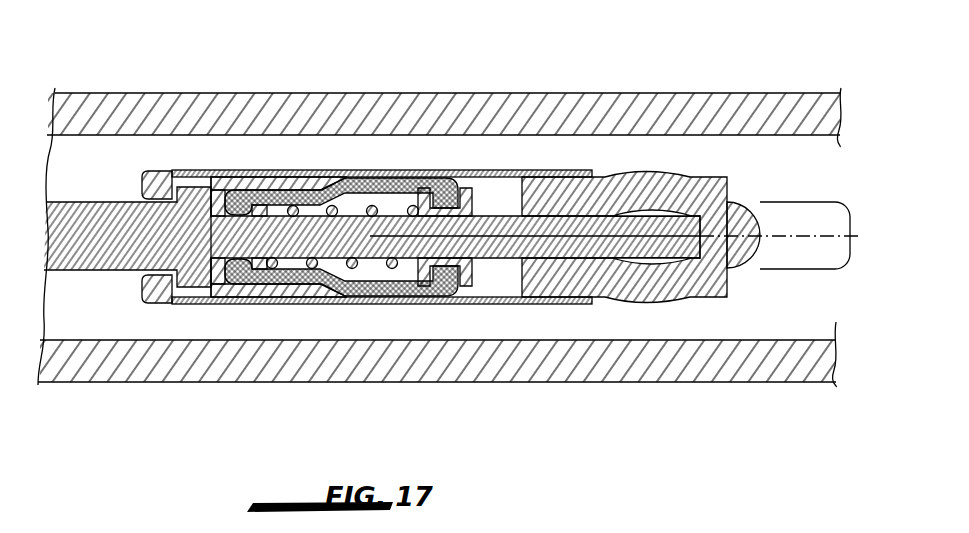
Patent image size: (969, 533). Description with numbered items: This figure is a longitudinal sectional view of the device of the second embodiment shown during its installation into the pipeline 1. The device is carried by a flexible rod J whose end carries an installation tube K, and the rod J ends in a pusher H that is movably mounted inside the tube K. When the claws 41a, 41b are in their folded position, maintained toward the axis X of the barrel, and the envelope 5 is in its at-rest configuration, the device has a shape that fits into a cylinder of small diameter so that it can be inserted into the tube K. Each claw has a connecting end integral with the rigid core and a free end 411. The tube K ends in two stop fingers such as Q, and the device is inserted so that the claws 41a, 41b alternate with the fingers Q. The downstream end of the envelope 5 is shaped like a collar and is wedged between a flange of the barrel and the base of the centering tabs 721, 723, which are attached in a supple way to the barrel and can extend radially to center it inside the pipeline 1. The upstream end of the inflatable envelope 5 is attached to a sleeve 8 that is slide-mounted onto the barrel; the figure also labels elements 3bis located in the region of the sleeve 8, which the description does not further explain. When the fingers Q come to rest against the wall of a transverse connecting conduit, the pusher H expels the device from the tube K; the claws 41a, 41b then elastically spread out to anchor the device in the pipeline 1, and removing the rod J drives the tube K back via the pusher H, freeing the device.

The pipeline 1 is at (700, 90).
The centering tab 721 is at (283, 176).
The centering tab 723 is at (286, 287).
The balls 3bis is at (410, 195).
The free end 411 is at (541, 183).
The sleeve 8 is at (477, 203).
The claw 41a is at (600, 176).
The claw 41b is at (600, 298).
The envelope 5 is at (381, 287).
The pusher H is at (190, 190).
The tube K is at (230, 305).
The flexible rod J is at (50, 245).
The axis X is at (775, 236).
The stop finger Q is at (820, 268).